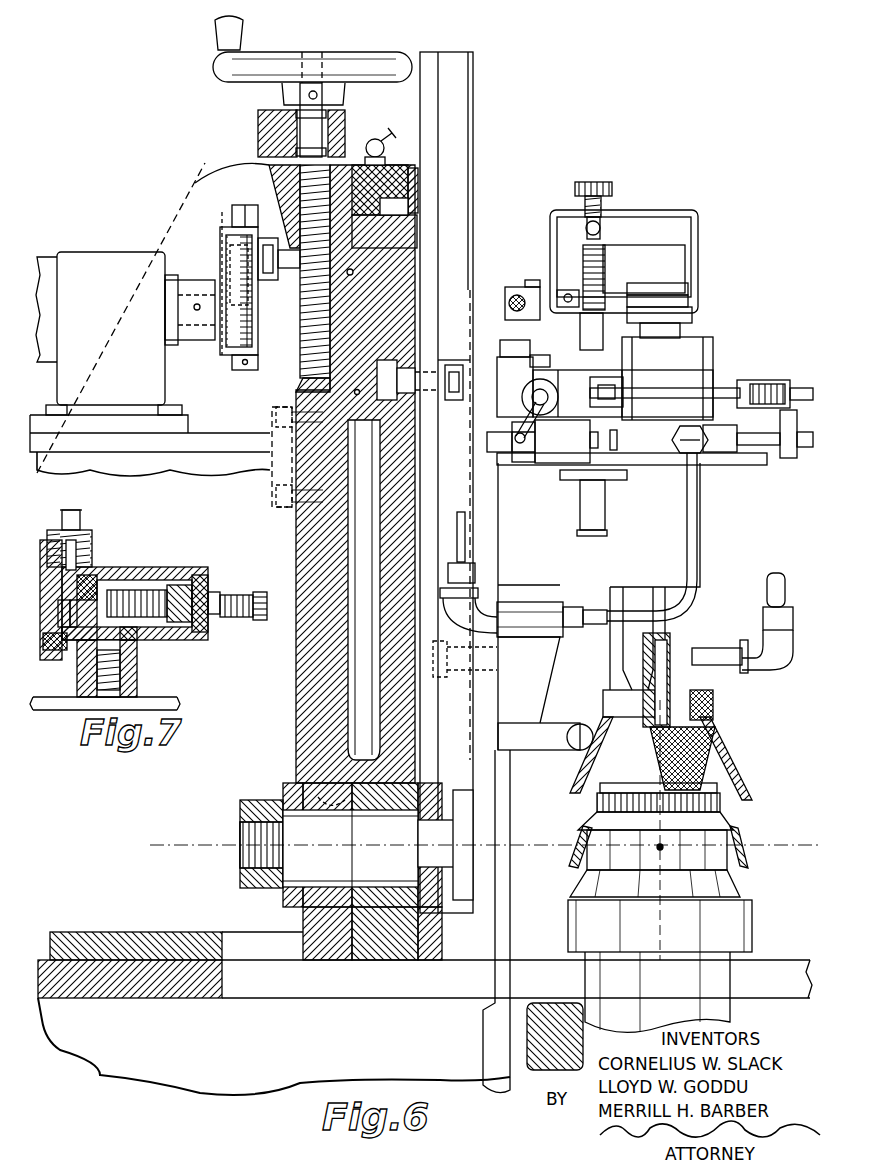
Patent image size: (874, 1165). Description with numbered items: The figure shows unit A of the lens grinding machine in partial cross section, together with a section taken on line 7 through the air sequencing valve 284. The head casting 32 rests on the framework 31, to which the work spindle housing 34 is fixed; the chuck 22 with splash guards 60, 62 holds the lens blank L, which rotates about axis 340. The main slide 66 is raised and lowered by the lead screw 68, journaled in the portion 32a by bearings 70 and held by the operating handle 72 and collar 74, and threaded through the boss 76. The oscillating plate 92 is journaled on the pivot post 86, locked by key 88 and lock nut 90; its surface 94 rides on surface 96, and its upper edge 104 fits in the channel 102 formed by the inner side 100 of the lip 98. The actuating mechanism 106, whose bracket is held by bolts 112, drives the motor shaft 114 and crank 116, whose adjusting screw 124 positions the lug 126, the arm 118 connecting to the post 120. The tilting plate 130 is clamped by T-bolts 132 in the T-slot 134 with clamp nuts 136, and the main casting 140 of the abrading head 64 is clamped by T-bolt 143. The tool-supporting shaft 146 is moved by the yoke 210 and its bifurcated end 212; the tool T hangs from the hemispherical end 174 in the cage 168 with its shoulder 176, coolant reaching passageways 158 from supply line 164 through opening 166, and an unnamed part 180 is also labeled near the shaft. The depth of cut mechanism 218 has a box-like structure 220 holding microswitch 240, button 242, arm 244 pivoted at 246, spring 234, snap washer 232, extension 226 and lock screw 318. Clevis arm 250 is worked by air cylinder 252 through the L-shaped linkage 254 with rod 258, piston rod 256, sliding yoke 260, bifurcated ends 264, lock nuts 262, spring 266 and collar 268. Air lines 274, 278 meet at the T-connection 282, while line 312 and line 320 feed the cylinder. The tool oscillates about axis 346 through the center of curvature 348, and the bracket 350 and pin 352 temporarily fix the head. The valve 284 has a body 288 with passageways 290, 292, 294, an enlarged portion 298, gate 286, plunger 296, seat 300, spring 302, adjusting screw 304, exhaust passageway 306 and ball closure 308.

In FIG. 6, the operating handle 72 is at (366, 54).
In FIG. 6, the uppermost portion of head casting 32a is at (282, 100).
In FIG. 6, the bearings 70 is at (330, 124).
In FIG. 6, the collar 74 is at (262, 152).
In FIG. 6, the boss 76 is at (272, 172).
In FIG. 6, the main slide 66 is at (300, 687).
In FIG. 6, the upper edge of oscillating plate 104 is at (430, 240).
In FIG. 6, the overhanging lip 98 is at (407, 172).
In FIG. 6, the channel 102 is at (418, 200).
In FIG. 6, the inner side of lip 100 is at (412, 212).
In FIG. 6, the finished surface 94 is at (354, 272).
In FIG. 6, the lead screw 68 is at (304, 340).
In FIG. 6, the surface 96 is at (355, 392).
In FIG. 6, the oscillating plate 92 is at (370, 640).
In FIG. 6, the arcuate T-slot 134 is at (390, 363).
In FIG. 6, the T-bolts 132 is at (406, 375).
In FIG. 6, the clamp nuts 136 is at (454, 389).
In FIG. 6, the bolts 112 is at (272, 415).
In FIG. 6, the tilting plate 130 is at (428, 720).
In FIG. 6, the key 88 is at (305, 785).
In FIG. 6, the lock nut 90 is at (260, 806).
In FIG. 6, the pivot post 86 is at (388, 862).
In FIG. 6, the head casting 32 is at (150, 932).
In FIG. 6, the supporting framework 31 is at (135, 998).
In FIG. 6, the motor shaft 114 is at (197, 312).
In FIG. 6, the actuating mechanism 106 is at (210, 238).
In FIG. 6, the traversing lug 126 is at (235, 207).
In FIG. 6, the crank member 116 is at (230, 365).
In FIG. 6, the adjusting screw 124 is at (232, 278).
In FIG. 6, the arm 118 is at (270, 282).
In FIG. 6, the post 120 is at (288, 270).
In FIG. 6, the unit A is at (556, 190).
In FIG. 6, the depth of cut mechanism 218 is at (698, 213).
In FIG. 6, the box-like main supporting structure 220 is at (626, 212).
In FIG. 6, the lock screw 318 is at (605, 228).
In FIG. 6, the spring 234 is at (604, 290).
In FIG. 6, the microswitch 240 is at (660, 252).
In FIG. 6, the switch button 242 is at (680, 290).
In FIG. 6, the switch actuating arm 244 is at (690, 305).
In FIG. 6, the bifurcated forward end 212 is at (700, 322).
In FIG. 6, the lateral extension 226 is at (637, 372).
In FIG. 6, the rod 258 is at (685, 388).
In FIG. 6, the yoke 210 is at (517, 300).
In FIG. 6, the pivot 246 is at (565, 298).
In FIG. 6, the abrading head 64 is at (750, 345).
In FIG. 6, the T-connection 282 is at (530, 381).
In FIG. 6, the air line 274 is at (538, 357).
In FIG. 6, the clevis arm 250 is at (625, 390).
In FIG. 6, the L-shaped linkage 254 is at (716, 382).
In FIG. 6, the bifurcated ends 264 is at (755, 382).
In FIG. 6, the collar 268 is at (780, 382).
In FIG. 6, the compression spring 266 is at (795, 392).
In FIG. 6, the piston rod 256 is at (738, 445).
In FIG. 6, the sliding yoke 260 is at (785, 420).
In FIG. 6, the lock nuts 262 is at (800, 450).
In FIG. 6, the air line 278 is at (541, 410).
In FIG. 7, the air line 278 is at (75, 520).
In FIG. 6, the air sequencing valve 284 is at (549, 455).
In FIG. 7, the air sequencing valve 284 is at (120, 568).
In FIG. 6, the section line 7— 7 is at (485, 432).
In FIG. 6, the air cylinder 252 is at (636, 465).
In FIG. 7, the air cylinder 252 is at (170, 698).
In FIG. 6, the main casting 140 is at (665, 522).
In FIG. 6, the snap washer 232 is at (577, 531).
In FIG. 6, the line 320 is at (700, 500).
In FIG. 6, the tool-supporting shaft 146 is at (700, 605).
In FIG. 6, the supply line 164 is at (778, 592).
In FIG. 6, the opening 166 is at (755, 650).
In FIG. 6, the cylinder 180 is at (685, 622).
In FIG. 6, the hemispherically-shaped end 174 is at (610, 745).
In FIG. 6, the supporting cage 168 is at (672, 705).
In FIG. 6, the depending shoulder 176 is at (690, 728).
In FIG. 6, the passageways 158 is at (695, 740).
In FIG. 6, the grinding tool T is at (705, 755).
In FIG. 6, the lens blank L is at (720, 770).
In FIG. 6, the splash guard 60 is at (738, 832).
In FIG. 6, the lens blank-receiving chuck 22 is at (745, 827).
In FIG. 6, the center of curvature 348 is at (700, 858).
In FIG. 6, the axis 346 is at (628, 852).
In FIG. 6, the splash guard 62 is at (752, 922).
In FIG. 6, the axis 340 is at (652, 910).
In FIG. 6, the work spindle housing 34 is at (705, 978).
In FIG. 6, the air line 312 is at (460, 525).
In FIG. 6, the T-bolt 143 is at (505, 683).
In FIG. 6, the pin 352 is at (552, 735).
In FIG. 6, the bracket 350 is at (508, 932).
In FIG. 7, the enlarged portion of passageway 298 is at (180, 580).
In FIG. 7, the main body 288 is at (160, 590).
In FIG. 7, the seat 300 is at (98, 590).
In FIG. 7, the plunger 296 is at (150, 580).
In FIG. 7, the spring 302 is at (205, 590).
In FIG. 7, the adjusting screw 304 is at (245, 600).
In FIG. 7, the internal passageway 290 is at (45, 540).
In FIG. 7, the gate 286 is at (62, 652).
In FIG. 7, the second passageway 292 is at (125, 657).
In FIG. 7, the third passageway 294 is at (165, 641).
In FIG. 7, the ball closure member 308 is at (66, 650).
In FIG. 7, the L-shaped exhaust passageway 306 is at (80, 655).